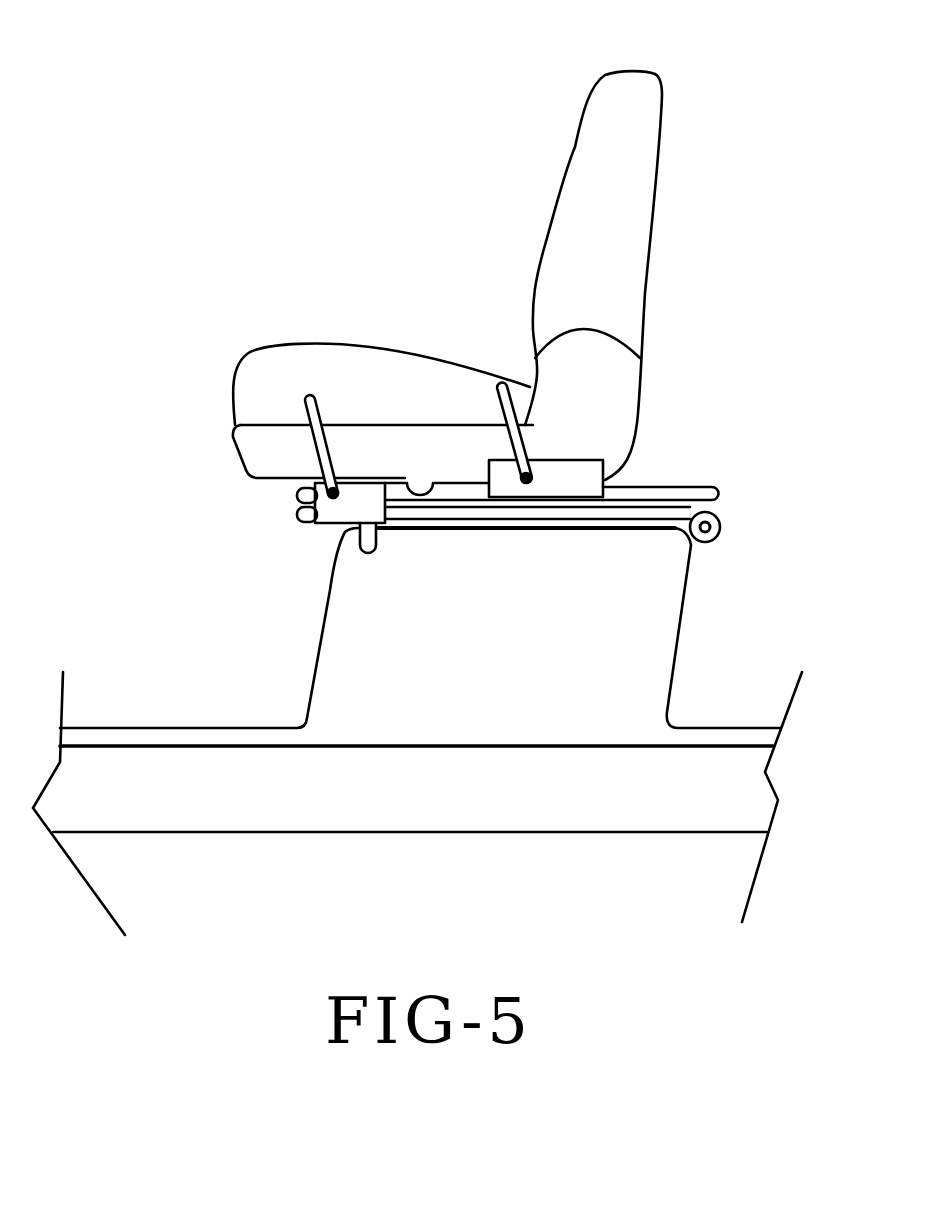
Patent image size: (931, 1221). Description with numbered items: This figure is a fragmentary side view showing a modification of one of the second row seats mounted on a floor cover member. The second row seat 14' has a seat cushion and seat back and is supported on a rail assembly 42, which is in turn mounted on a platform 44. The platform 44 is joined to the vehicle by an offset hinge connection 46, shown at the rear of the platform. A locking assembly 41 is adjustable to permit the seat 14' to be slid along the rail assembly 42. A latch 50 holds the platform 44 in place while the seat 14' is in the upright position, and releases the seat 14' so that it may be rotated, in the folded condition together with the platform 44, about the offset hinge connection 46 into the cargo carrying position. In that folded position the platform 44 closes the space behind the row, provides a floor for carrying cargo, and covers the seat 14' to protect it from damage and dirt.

The second row seat 14' is at (648, 275).
The locking assembly 41 is at (497, 467).
The rail assembly 42 is at (647, 487).
The platform 44 is at (660, 518).
The offset hinge connection 46 is at (719, 519).
The latch 50 is at (335, 517).